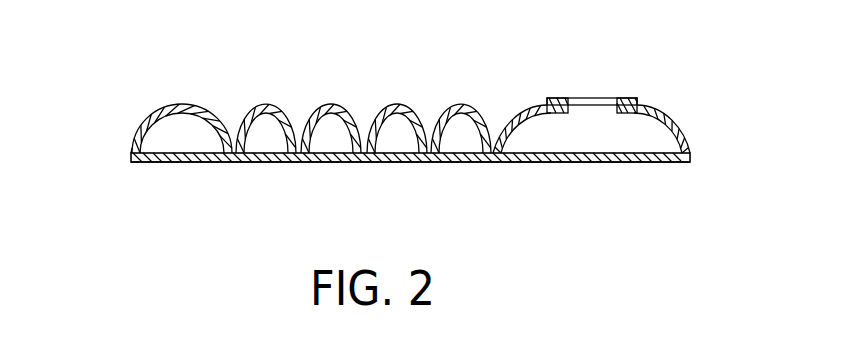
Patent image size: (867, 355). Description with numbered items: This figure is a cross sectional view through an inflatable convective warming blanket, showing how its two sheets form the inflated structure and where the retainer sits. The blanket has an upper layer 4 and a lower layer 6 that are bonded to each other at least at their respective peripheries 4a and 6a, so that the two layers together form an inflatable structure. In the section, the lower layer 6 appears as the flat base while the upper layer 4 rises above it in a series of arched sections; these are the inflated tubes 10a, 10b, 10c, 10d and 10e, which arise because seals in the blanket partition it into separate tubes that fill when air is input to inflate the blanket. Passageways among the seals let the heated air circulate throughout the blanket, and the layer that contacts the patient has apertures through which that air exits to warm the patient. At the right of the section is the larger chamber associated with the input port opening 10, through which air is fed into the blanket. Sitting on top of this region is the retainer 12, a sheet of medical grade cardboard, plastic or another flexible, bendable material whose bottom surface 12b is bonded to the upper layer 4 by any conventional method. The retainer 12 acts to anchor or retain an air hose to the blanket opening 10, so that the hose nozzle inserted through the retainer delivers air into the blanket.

The upper layer 4 is at (413, 122).
The periphery of upper layer 4a is at (131, 151).
The lower layer 6 is at (208, 163).
The periphery of lower layer 6a is at (130, 161).
The input port opening 10 is at (593, 128).
The inflated tube 10a is at (168, 138).
The inflated tube 10b is at (257, 138).
The inflated tube 10c is at (333, 138).
The inflated tube 10d is at (397, 138).
The inflated tube 10e is at (465, 138).
The retainer 12 is at (640, 100).
The bottom surface 12b is at (612, 133).